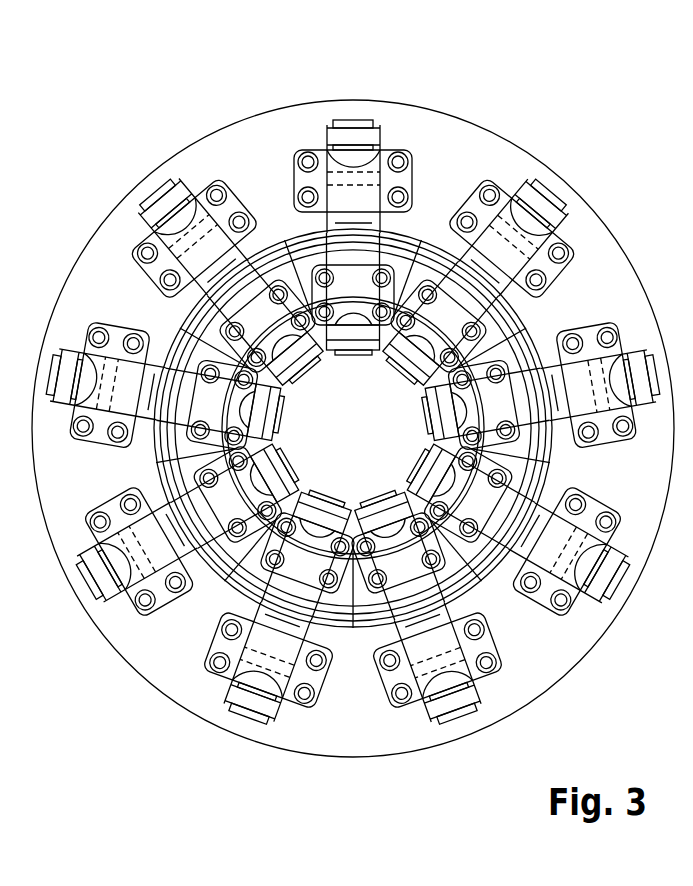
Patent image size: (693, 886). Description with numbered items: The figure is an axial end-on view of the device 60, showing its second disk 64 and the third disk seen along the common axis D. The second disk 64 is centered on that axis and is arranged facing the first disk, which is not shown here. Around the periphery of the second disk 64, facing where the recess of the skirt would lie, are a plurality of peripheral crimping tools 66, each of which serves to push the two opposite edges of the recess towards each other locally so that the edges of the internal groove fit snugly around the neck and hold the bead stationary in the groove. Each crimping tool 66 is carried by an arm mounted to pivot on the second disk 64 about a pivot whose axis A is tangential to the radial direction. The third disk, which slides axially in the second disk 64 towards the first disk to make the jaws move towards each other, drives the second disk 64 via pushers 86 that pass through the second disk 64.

The device 60 is at (443, 85).
The second disk 64 is at (465, 155).
The peripheral crimping tool 66 is at (557, 177).
The pusher 86 is at (514, 235).